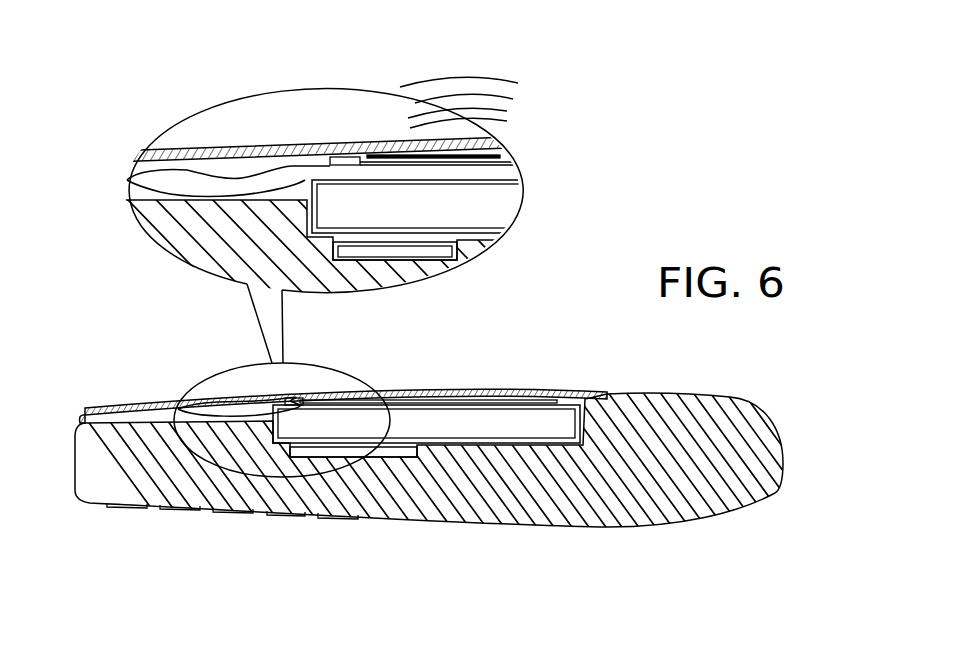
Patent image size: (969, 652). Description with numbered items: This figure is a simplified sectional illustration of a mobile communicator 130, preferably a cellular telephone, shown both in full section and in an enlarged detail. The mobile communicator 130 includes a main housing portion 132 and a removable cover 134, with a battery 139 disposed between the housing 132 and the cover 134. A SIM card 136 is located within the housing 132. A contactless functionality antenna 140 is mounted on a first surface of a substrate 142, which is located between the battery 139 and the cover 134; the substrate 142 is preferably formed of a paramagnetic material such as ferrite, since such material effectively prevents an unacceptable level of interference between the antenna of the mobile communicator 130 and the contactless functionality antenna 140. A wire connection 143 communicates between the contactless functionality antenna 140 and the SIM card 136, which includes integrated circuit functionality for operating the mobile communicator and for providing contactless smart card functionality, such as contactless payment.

The mobile communicator 130 is at (737, 392).
The main housing portion 132 is at (735, 503).
The removable cover 134 is at (127, 403).
The SIM card 136 is at (398, 453).
The battery 139 is at (563, 428).
The contactless functionality antenna 140 is at (503, 392).
The substrate 142 is at (286, 396).
The wire connection 143 is at (176, 425).